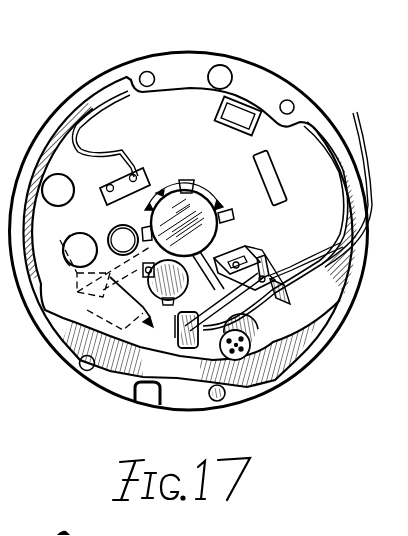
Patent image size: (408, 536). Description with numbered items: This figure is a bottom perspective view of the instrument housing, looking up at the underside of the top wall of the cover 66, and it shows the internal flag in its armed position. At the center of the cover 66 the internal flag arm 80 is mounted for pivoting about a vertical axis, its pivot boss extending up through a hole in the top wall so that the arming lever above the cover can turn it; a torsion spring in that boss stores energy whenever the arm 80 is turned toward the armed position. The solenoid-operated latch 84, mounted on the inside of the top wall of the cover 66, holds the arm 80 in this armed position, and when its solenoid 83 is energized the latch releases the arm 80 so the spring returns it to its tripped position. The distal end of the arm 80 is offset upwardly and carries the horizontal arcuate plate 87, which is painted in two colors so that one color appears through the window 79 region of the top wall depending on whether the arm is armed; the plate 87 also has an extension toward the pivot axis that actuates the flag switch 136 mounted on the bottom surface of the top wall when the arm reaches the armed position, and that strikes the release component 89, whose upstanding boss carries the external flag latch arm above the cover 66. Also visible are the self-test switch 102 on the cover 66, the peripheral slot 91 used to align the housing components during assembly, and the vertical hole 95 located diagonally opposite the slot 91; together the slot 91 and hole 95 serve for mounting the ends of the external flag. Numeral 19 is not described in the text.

The cover 66 is at (137, 58).
The vertical hole 95 is at (222, 66).
The window 79 is at (270, 172).
The internal flag arm 80 is at (212, 185).
The pinion 19 is at (166, 190).
The switch 102 is at (106, 179).
The horizontal arcuate plate 87 is at (225, 342).
The release component 89 is at (225, 250).
The flag switch 136 is at (266, 257).
The solenoid-operated latch 84 is at (265, 320).
The solenoid 83 is at (269, 314).
The slot 91 is at (143, 407).